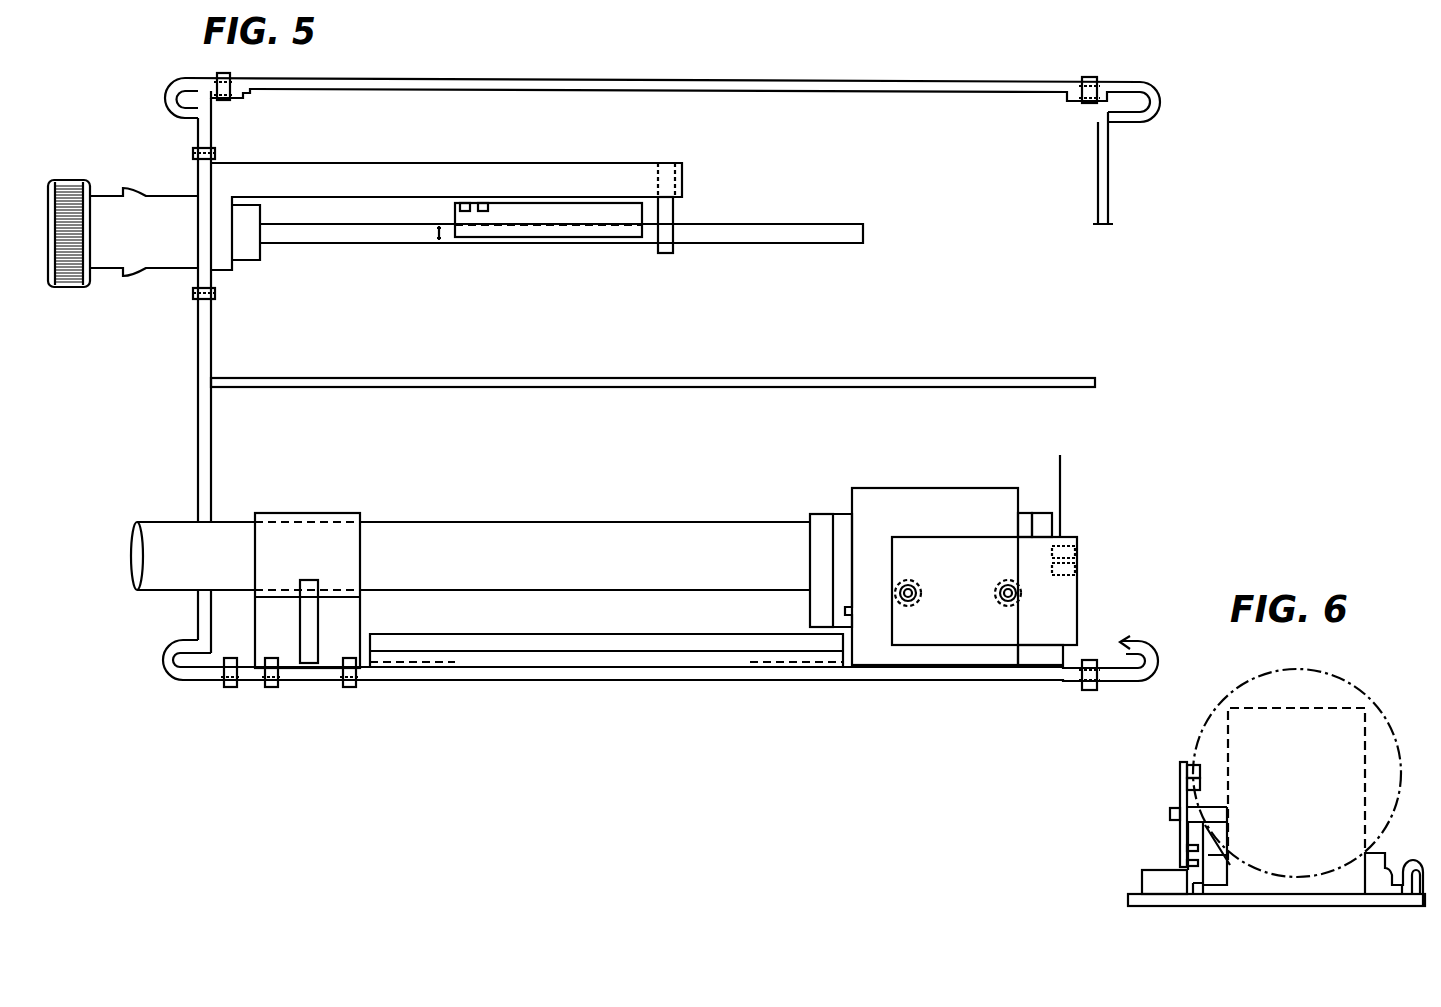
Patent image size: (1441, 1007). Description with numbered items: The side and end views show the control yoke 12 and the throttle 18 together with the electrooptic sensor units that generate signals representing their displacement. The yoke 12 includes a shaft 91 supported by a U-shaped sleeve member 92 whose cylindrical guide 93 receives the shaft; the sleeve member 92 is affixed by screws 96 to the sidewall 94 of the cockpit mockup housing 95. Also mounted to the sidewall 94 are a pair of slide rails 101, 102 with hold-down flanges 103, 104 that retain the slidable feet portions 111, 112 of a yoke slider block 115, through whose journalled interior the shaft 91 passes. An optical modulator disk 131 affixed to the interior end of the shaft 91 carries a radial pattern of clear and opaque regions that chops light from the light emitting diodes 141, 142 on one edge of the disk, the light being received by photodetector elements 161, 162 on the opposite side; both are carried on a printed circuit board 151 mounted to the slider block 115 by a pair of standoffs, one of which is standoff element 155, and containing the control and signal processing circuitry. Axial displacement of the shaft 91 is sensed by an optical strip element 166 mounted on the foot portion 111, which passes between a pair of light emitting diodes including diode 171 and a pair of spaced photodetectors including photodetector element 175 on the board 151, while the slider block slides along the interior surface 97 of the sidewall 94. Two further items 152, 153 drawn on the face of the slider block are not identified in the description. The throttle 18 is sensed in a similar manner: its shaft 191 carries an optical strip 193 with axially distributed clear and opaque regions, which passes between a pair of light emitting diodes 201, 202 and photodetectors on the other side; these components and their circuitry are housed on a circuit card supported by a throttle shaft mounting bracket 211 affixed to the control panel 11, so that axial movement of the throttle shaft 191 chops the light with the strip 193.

In FIG. 5, the cockpit mockup housing 95 is at (639, 76).
In FIG. 5, the control panel 11 is at (198, 392).
In FIG. 5, the throttle 18 is at (108, 195).
In FIG. 5, the throttle shaft mounting bracket 211 is at (317, 170).
In FIG. 5, the throttle shaft 191 is at (326, 244).
In FIG. 5, the optical strip 193 is at (553, 238).
In FIG. 5, the light emitting diode 201 is at (463, 203).
In FIG. 5, the light emitting diode 202 is at (485, 203).
In FIG. 5, the control yoke 12 is at (153, 513).
In FIG. 5, the shaft 91 is at (483, 522).
In FIG. 5, the U-shaped sleeve member 92 is at (336, 513).
In FIG. 5, the cylindrical guide 93 is at (255, 597).
In FIG. 5, the screws 96 is at (270, 681).
In FIG. 5, the sidewall 94 is at (433, 675).
In FIG. 5, the interior surface 97 is at (680, 672).
In FIG. 5, the yoke slider block 115 is at (920, 488).
In FIG. 5, the slidable feet portion 111 is at (873, 665).
In FIG. 6, the slidable feet portion 111 is at (1197, 888).
In FIG. 5, the screw 153 is at (912, 585).
In FIG. 5, the screw 152 is at (996, 592).
In FIG. 5, the light emitting diode 141 is at (1076, 547).
In FIG. 6, the light emitting diode 141 is at (1201, 770).
In FIG. 5, the light emitting diode 142 is at (1077, 570).
In FIG. 6, the light emitting diode 142 is at (1201, 785).
In FIG. 5, the photodetector element 161 is at (1050, 553).
In FIG. 5, the photodetector element 162 is at (1052, 573).
In FIG. 6, the optical modulator disk 131 is at (1343, 673).
In FIG. 6, the slide rail 102 is at (1428, 903).
In FIG. 6, the slidable feet portion 112 is at (1392, 870).
In FIG. 6, the slide rail 101 is at (1150, 870).
In FIG. 6, the printed circuit board 151 is at (1182, 762).
In FIG. 6, the standoff element 155 is at (1218, 815).
In FIG. 6, the light emitting diode 171 is at (1192, 845).
In FIG. 6, the optical strip element 166 is at (1222, 845).
In FIG. 6, the hold-down flange 103 is at (1218, 875).
In FIG. 6, the photodetector element 175 is at (1193, 866).
In FIG. 6, the hold-down flange 104 is at (1375, 878).